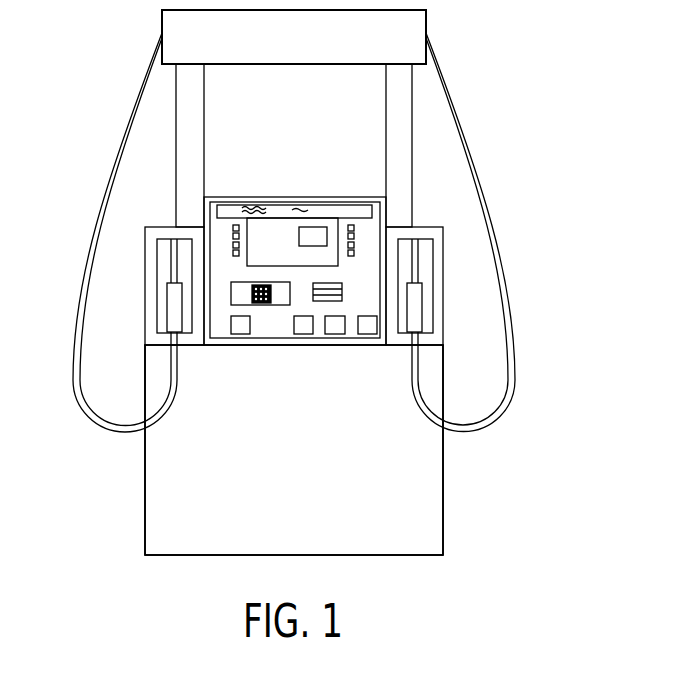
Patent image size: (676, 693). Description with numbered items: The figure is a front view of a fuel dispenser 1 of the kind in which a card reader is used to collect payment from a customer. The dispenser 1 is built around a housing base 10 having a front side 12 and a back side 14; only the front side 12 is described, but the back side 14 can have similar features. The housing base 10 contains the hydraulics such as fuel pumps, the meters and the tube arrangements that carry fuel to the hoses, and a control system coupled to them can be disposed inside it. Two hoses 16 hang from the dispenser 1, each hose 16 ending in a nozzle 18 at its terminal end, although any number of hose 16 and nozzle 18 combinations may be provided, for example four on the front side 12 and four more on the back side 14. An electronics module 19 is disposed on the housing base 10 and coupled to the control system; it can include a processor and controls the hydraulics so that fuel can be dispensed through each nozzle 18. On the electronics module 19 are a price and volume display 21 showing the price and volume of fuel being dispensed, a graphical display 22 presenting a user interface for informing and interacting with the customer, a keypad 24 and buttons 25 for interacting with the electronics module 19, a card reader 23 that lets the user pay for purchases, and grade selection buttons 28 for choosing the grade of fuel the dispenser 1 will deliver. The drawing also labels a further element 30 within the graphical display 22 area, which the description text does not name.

The fuel dispenser 1 is at (515, 568).
The housing base 10 is at (436, 477).
The front side 12 is at (157, 530).
The back side 14 is at (462, 359).
The hose 16 is at (83, 255).
The nozzle 18 is at (173, 298).
The electronics module 19 is at (350, 196).
The price and volume display 21 is at (372, 210).
The graphical display 22 is at (257, 228).
The card reader 23 is at (342, 292).
The keypad 24 is at (253, 303).
The buttons 25 is at (355, 238).
The grade selection buttons 28 is at (368, 324).
The display window 30 is at (313, 226).